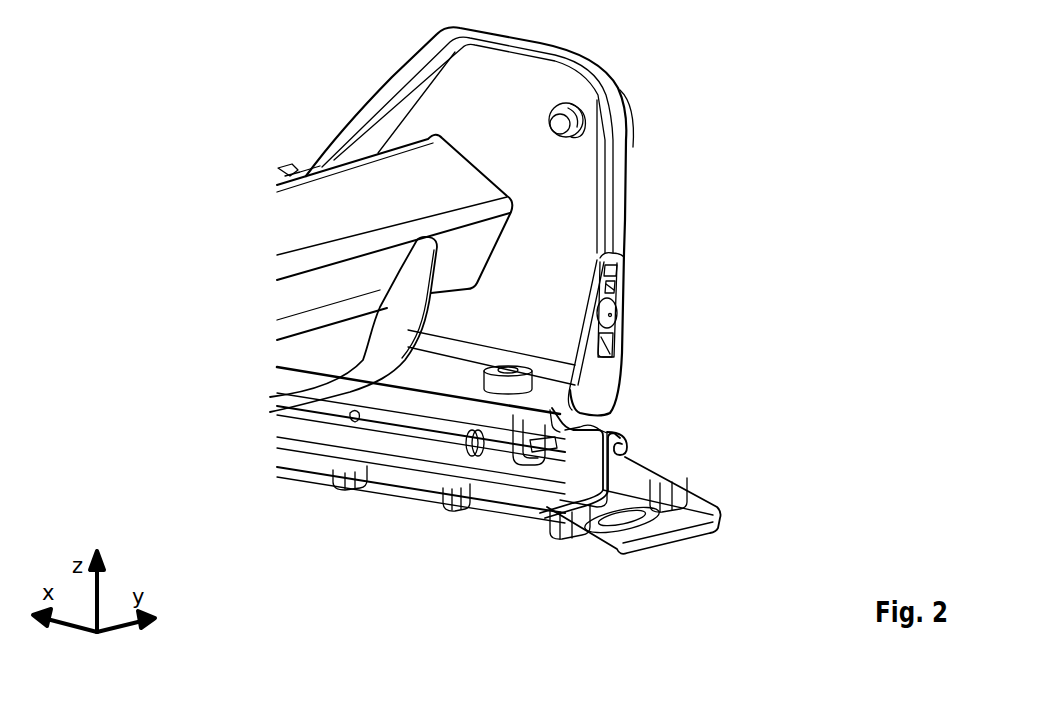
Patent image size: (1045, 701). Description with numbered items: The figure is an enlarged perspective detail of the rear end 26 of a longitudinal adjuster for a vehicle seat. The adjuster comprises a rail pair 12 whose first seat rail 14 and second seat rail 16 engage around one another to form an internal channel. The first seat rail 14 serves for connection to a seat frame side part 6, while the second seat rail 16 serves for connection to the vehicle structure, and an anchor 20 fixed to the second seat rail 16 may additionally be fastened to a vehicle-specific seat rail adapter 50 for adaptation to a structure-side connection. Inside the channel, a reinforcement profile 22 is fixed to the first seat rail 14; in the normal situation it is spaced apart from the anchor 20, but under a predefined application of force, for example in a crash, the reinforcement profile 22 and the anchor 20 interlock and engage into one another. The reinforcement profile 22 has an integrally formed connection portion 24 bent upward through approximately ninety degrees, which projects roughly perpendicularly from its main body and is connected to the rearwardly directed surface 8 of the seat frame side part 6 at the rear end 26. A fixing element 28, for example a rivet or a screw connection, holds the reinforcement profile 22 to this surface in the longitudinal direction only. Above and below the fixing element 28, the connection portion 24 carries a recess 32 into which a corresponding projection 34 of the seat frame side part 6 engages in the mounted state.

The seat frame side part 6 is at (563, 160).
The rearwardly directed surface 8 is at (615, 188).
The rail pair 12 is at (268, 131).
The first seat rail 14 is at (383, 397).
The second seat rail 16 is at (413, 430).
The anchor 20 is at (543, 465).
The reinforcement profile 22 is at (537, 427).
The connection portion 24 is at (595, 380).
The rear end 26 is at (728, 468).
The fixing element 28 is at (613, 320).
The recess 32 is at (617, 270).
The projection 34 is at (615, 292).
The vehicle-specific seat rail adapter 50 is at (427, 493).